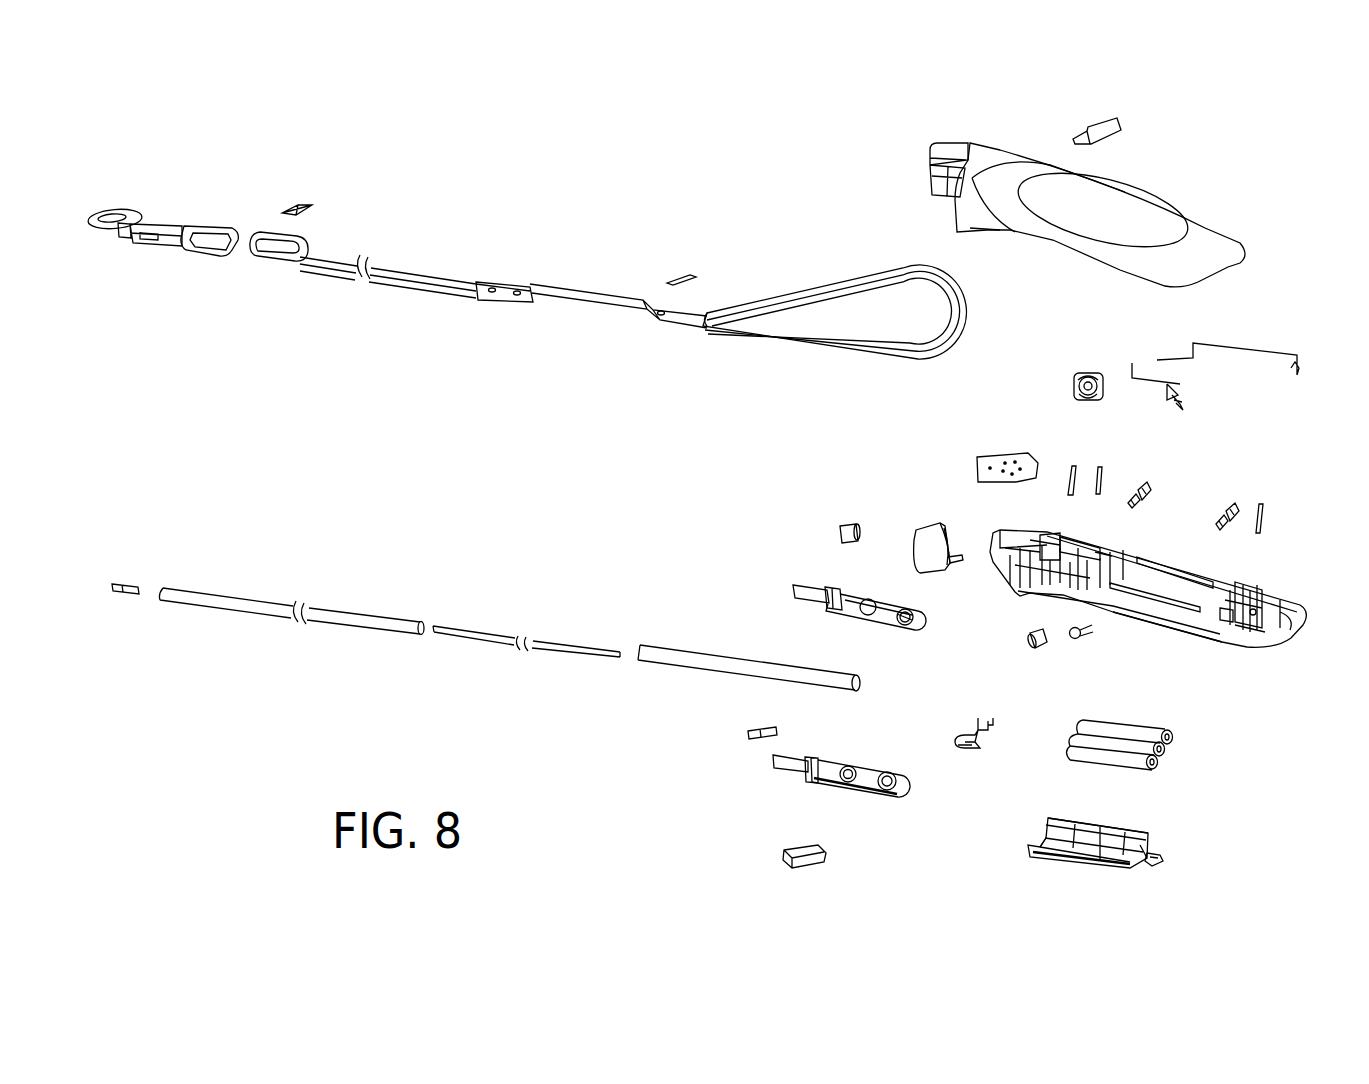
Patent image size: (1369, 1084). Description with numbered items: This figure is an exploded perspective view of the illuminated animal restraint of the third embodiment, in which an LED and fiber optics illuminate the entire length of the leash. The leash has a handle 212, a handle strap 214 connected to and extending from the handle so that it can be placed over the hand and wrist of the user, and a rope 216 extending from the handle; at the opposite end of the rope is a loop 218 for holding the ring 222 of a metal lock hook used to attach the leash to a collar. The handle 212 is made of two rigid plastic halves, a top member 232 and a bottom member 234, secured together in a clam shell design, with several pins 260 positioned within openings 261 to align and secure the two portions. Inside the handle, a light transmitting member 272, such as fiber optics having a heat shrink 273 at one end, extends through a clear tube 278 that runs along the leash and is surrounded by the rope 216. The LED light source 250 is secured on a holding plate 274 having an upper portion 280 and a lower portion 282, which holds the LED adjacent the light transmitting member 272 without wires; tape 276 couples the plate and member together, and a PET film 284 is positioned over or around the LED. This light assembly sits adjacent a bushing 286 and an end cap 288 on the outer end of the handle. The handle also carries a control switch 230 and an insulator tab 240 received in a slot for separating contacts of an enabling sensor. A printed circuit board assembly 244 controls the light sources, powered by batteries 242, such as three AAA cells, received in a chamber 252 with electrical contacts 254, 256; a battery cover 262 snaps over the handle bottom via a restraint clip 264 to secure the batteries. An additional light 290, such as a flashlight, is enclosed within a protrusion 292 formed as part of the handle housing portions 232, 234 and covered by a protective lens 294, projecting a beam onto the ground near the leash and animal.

The handle 212 is at (1145, 168).
The handle strap 214 is at (830, 290).
The rope 216 is at (355, 278).
The loop 218 is at (268, 260).
The ring 222 is at (207, 230).
The control switch 230 is at (1075, 380).
The top member 232 is at (1195, 218).
The bottom member 234 is at (1245, 650).
The insulator tab 240 is at (1100, 120).
The batteries 242 is at (1088, 755).
The printed circuit board assembly 244 is at (990, 455).
The LED light source 250 is at (970, 720).
The chamber 252 is at (1178, 635).
The electrical contact 254 is at (1148, 474).
The electrical contact 256 is at (1237, 508).
The pins 260 is at (1068, 472).
The openings 261 is at (1050, 535).
The battery cover 262 is at (1075, 860).
The restraint clip 264 is at (1154, 866).
The light transmitting member 272 is at (470, 632).
The heat shrink 273 is at (700, 665).
The holding plate 274 is at (790, 582).
The tape 276 is at (133, 585).
The clear tube 278 is at (345, 613).
The upper portion 280 is at (850, 613).
The lower portion 282 is at (830, 785).
The PET film 284 is at (795, 862).
The bushing 286 is at (842, 525).
The end cap 288 is at (920, 522).
The additional light 290 is at (1078, 640).
The protrusion 292 is at (975, 233).
The protective lens 294 is at (1035, 652).